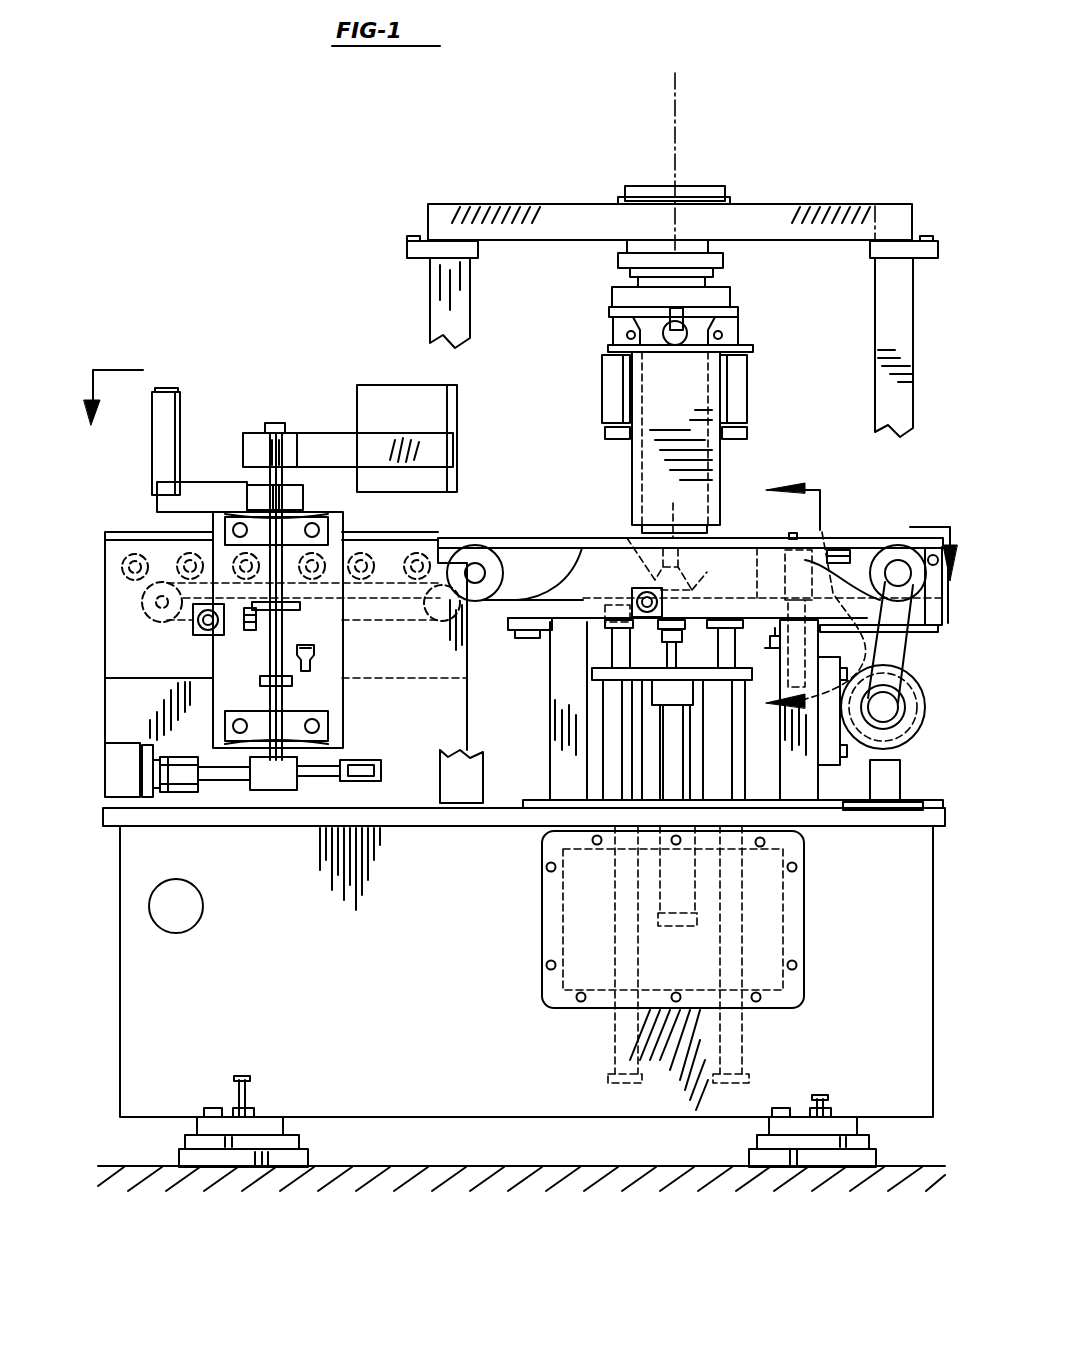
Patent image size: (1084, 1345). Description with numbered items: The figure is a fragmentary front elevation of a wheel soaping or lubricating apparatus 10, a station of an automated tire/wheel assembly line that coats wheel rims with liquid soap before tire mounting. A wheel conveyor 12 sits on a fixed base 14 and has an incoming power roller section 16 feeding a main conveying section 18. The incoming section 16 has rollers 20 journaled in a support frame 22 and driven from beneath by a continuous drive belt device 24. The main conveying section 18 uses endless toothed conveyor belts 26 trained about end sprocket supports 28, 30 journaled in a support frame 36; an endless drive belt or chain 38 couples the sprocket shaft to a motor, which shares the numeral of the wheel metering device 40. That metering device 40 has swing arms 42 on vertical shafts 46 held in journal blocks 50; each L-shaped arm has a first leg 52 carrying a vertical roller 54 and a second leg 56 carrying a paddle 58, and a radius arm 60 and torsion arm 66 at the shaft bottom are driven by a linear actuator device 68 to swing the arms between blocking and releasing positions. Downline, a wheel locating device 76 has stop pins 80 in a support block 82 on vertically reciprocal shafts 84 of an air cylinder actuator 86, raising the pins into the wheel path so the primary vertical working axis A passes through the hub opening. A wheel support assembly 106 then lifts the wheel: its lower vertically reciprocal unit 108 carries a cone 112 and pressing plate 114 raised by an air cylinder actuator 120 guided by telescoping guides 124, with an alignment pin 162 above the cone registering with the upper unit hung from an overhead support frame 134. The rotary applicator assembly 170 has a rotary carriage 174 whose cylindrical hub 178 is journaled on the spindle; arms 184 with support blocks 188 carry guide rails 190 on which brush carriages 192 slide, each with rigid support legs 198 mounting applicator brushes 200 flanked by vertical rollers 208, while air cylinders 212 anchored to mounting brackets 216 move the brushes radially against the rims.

The wheel lubricating apparatus 10 is at (300, 170).
The primary vertical working axis A is at (677, 103).
The wheel conveyor 12 is at (474, 512).
The fixed base 14 is at (120, 952).
The incoming power roller section 16 is at (137, 595).
The main conveying section 18 is at (872, 553).
The rollers 20 is at (128, 555).
The support frame 22 is at (112, 655).
The continuous drive belt device 24 is at (167, 622).
The endless toothed conveyor belts 26 is at (550, 535).
The end sprocket support 28 is at (480, 547).
The end sprocket support 30 is at (888, 546).
The support frame 36 is at (532, 618).
The endless drive belt or chain 38 is at (862, 778).
The wheel metering device 40 is at (150, 315).
The swing arm 42 is at (318, 420).
The vertical shaft 46 is at (275, 430).
The journal blocks 50 is at (300, 520).
The first legs 52 is at (197, 482).
The vertical rollers 54 is at (187, 395).
The second legs 56 is at (447, 448).
The paddles 58 is at (378, 385).
The radius arm 60 is at (305, 781).
The torsion arm 66 is at (232, 781).
The linear actuator device 68 is at (187, 792).
The wheel locating device 76 is at (822, 530).
The stop pins 80 is at (793, 535).
The support block 82 is at (853, 532).
The vertically reciprocal shafts 84 is at (905, 650).
The air cylinder actuator 86 is at (785, 650).
The wheel support assembly 106 is at (740, 532).
The lower vertically reciprocal unit 108 is at (588, 693).
The cone 112 is at (627, 537).
The pressing plate 114 is at (700, 595).
The air cylinder actuator 120 is at (735, 849).
The telescoping guides 124 is at (605, 751).
The overhead support frame 134 is at (837, 204).
The alignment pin 162 is at (676, 444).
The rotary applicator assembly 170 is at (765, 388).
The rotary carriage 174 is at (748, 282).
The cylindrical hub 178 is at (702, 254).
The arm 184 is at (616, 294).
The support blocks 188 is at (616, 322).
The guide rails 190 is at (617, 348).
The brush carriage 192 is at (626, 336).
The rigid support legs 198 is at (632, 443).
The applicator brushes 200 is at (632, 473).
The vertical rollers 208 is at (600, 383).
The air cylinder 212 is at (640, 300).
The mounting brackets 216 is at (730, 307).